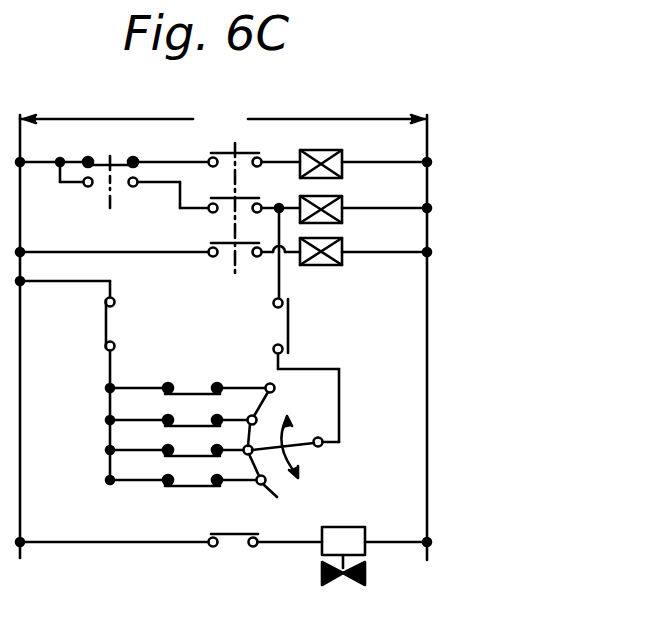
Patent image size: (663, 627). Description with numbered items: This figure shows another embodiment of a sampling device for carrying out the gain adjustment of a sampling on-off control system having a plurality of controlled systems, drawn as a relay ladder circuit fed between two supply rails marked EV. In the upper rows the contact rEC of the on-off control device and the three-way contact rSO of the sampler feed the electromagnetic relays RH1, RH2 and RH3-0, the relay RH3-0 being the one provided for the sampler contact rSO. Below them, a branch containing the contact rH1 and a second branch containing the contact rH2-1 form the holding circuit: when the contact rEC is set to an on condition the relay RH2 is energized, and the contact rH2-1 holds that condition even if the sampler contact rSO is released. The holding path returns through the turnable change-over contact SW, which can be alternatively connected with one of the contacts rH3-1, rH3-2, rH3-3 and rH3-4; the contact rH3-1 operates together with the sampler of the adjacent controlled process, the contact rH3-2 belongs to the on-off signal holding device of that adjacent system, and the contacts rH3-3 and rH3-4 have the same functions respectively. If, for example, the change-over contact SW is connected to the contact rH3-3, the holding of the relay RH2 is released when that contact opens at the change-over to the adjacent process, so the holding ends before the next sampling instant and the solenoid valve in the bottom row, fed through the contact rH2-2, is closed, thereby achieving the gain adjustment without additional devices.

The supply voltage EV is at (223, 119).
The contact of the on-off control device rEC is at (112, 170).
The contact of the on-off control device or sampler rSO is at (241, 202).
The electromagnetic relay RH1 is at (346, 158).
The electromagnetic relay RH2 is at (346, 203).
The electromagnetic relay RH3-0 is at (223, 246).
The contact rH1 is at (87, 378).
The contact rH2-1 is at (318, 325).
The contact rH3-1 is at (190, 374).
The contact rH3-2 is at (181, 409).
The contact rH3-3 is at (179, 440).
The contact rH3-4 is at (186, 470).
The turnable change-over contact SW is at (304, 440).
The contact rH2-2 is at (169, 528).